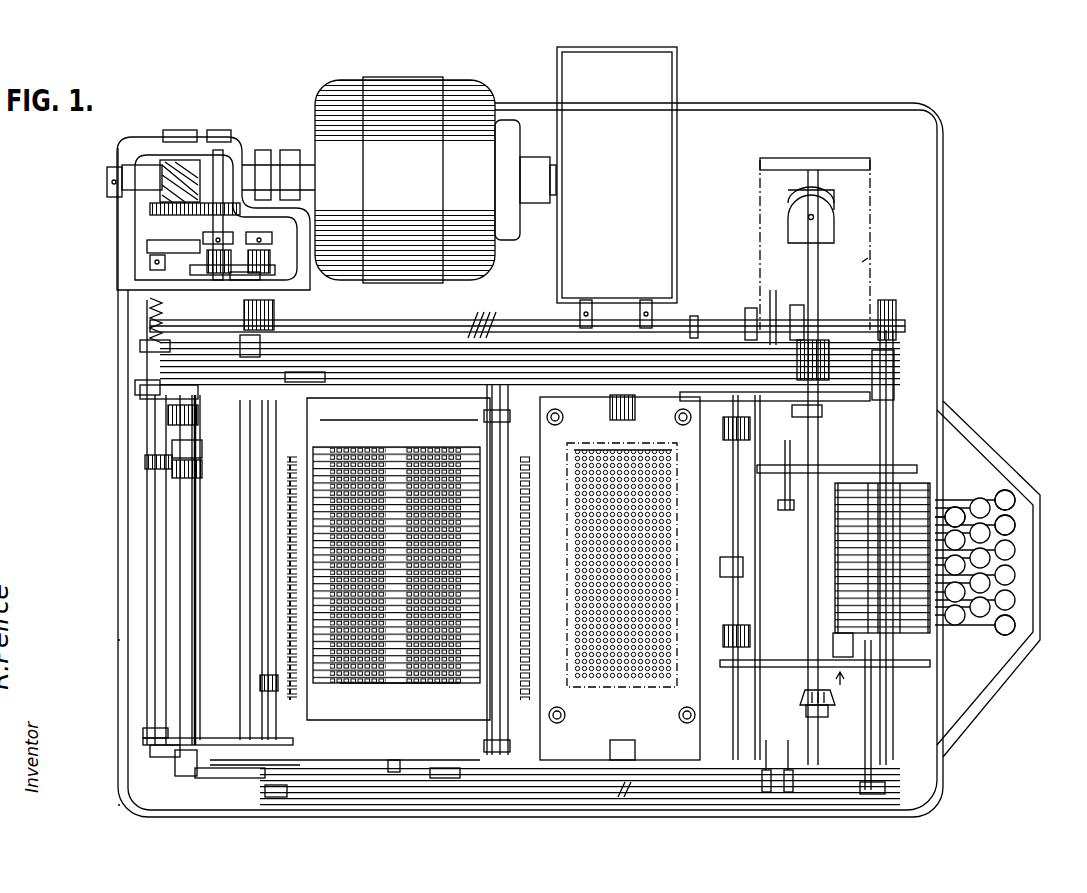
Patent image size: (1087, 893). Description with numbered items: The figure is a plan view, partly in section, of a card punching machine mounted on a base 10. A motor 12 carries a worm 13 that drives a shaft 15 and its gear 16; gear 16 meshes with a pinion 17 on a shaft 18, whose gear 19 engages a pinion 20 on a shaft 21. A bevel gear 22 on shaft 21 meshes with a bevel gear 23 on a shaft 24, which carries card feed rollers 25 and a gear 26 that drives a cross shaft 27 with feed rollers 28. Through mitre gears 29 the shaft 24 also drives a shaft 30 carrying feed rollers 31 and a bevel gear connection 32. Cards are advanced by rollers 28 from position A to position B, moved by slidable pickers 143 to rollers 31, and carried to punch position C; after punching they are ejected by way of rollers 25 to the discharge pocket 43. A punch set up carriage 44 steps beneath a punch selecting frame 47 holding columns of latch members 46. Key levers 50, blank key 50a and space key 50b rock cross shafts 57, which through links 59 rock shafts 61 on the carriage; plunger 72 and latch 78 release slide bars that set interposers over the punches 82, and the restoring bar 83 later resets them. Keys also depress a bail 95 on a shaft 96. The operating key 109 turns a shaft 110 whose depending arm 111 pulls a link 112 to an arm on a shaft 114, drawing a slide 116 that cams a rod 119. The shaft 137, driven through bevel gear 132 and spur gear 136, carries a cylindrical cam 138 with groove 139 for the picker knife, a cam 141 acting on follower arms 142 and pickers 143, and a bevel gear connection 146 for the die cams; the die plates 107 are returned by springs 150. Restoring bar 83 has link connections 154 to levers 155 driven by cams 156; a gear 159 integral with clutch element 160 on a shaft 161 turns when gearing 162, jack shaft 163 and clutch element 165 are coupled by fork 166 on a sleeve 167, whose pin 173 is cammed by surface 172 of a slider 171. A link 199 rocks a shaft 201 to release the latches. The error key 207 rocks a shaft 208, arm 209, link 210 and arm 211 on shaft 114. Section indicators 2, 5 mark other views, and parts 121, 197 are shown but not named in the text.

The base 10 is at (945, 192).
The motor 12 is at (396, 82).
The worm 13 is at (150, 192).
The shaft 15 is at (205, 162).
The gear 16 is at (148, 215).
The pinion 17 is at (228, 190).
The shaft 18 is at (220, 258).
The gear 19 is at (245, 277).
The pinion 20 is at (272, 270).
The shaft 21 is at (264, 245).
The bevel gear 22 is at (276, 314).
The bevel gear 23 is at (249, 357).
The shaft 24 is at (398, 328).
The card feed rollers 25 is at (640, 313).
The gear 26 is at (892, 310).
The cross shaft 27 is at (887, 422).
The feed rollers 28 is at (822, 426).
The mitre gears 29 is at (750, 325).
The shaft 30 is at (746, 594).
The feed rollers 31 is at (752, 497).
The bevel gear connection 32 is at (744, 571).
The discharge pocket 43 is at (655, 92).
The punch set up carriage 44 is at (260, 685).
The latch members 46 is at (418, 652).
The punch selecting frame 47 is at (318, 422).
The punch selecting key levers 50 is at (1012, 590).
The key 50a is at (1016, 525).
The space key 50b is at (962, 510).
The cross shafts 57 is at (698, 336).
The links 59 is at (595, 802).
The shafts 61 is at (284, 378).
The spring pressed plunger 72 is at (286, 526).
The spring pressed latch 78 is at (531, 561).
The punches 82 is at (602, 606).
The restoring bar 83 is at (250, 440).
The bail 95 is at (938, 503).
The shaft 96 is at (896, 470).
The die plates 107 is at (577, 702).
The operating key 109 is at (1012, 494).
The shaft 110 is at (871, 399).
The depending arm 111 is at (872, 368).
The link connection 112 is at (305, 337).
The shaft 114 is at (262, 661).
The slide 116 is at (148, 383).
The rod 119 is at (148, 263).
The ratchet 121 is at (147, 246).
The bevel gear 132 is at (802, 318).
The spur gear 136 is at (826, 366).
The shaft 137 is at (819, 268).
The cylindrical cam 138 is at (820, 232).
The groove 139 is at (815, 199).
The cam 141 is at (788, 480).
The follower arms 142 is at (860, 470).
The slidable pickers 143 is at (931, 665).
The bevel gear connection 146 is at (814, 699).
The springs 150 is at (680, 422).
The link connections 154 is at (219, 370).
The pivoted levers 155 is at (277, 788).
The cams 156 is at (176, 778).
The gear 159 is at (203, 473).
The clutch element 160 is at (203, 449).
The shaft 161 is at (193, 560).
The gearing 162 is at (150, 307).
The jack shaft 163 is at (148, 350).
The clutch element 165 is at (199, 421).
The clutch operating fork 166 is at (146, 463).
The sleeve 167 is at (163, 557).
The slider 171 is at (210, 740).
The cam surface 172 is at (165, 741).
The pin 173 is at (165, 738).
The rod 197 is at (200, 736).
The link 199 is at (395, 764).
The shaft 201 is at (500, 424).
The error key 207 is at (1010, 636).
The shaft 208 is at (872, 707).
The arm 209 is at (885, 791).
The link 210 is at (360, 796).
The arm 211 is at (360, 794).
The position A is at (868, 259).
The position B is at (843, 691).
The punch position C is at (674, 538).
The section line FIG. 2 is at (574, 626).
The section line FIG. 5 is at (537, 805).